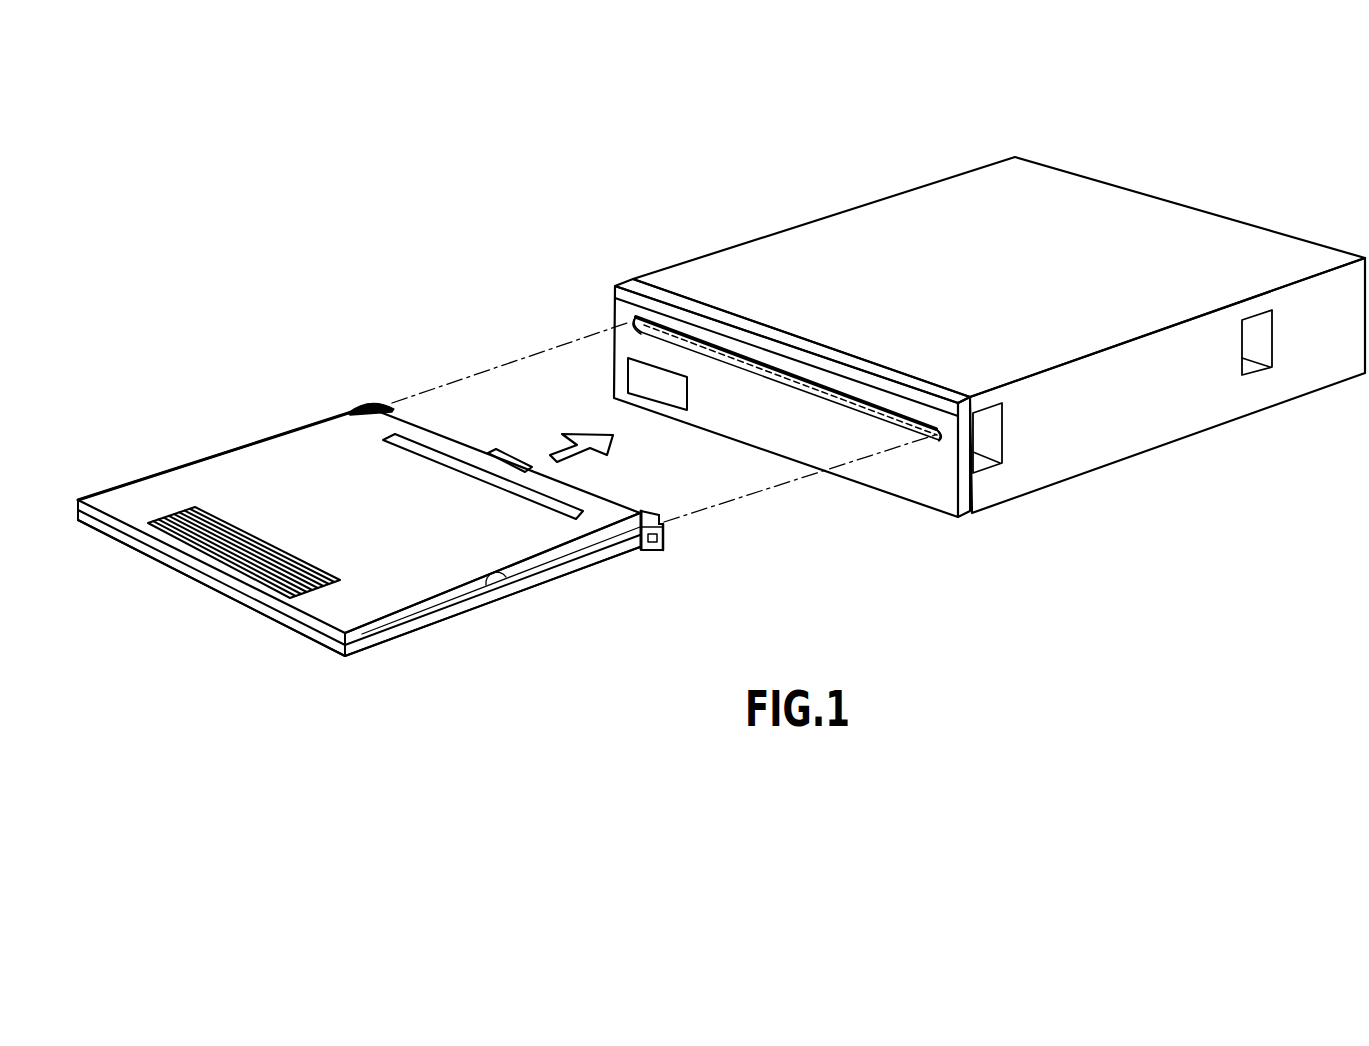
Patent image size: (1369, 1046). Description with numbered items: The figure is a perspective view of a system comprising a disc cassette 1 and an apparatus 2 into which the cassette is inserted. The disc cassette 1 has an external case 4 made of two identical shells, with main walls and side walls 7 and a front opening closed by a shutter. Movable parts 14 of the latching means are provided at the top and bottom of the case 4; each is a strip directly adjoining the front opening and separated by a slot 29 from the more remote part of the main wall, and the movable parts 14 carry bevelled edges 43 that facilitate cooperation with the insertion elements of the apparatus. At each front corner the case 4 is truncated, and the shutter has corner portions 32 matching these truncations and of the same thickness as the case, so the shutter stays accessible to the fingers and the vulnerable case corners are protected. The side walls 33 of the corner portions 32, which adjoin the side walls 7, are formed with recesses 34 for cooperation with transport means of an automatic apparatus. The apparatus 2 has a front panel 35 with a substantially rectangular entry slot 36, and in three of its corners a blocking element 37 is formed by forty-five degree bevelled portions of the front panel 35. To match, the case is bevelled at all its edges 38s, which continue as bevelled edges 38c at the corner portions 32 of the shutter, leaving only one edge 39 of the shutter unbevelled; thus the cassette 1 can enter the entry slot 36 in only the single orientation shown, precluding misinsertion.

The disc cassette 1 is at (208, 456).
The apparatus 2 is at (813, 223).
The external case 4 is at (532, 540).
The side walls 7 is at (413, 627).
The movable parts 14 is at (458, 447).
The slot 29 is at (434, 460).
The corner portions 32 is at (378, 403).
The side walls of the corner portions 33 is at (663, 527).
The recesses 34 is at (661, 546).
The front panel 35 is at (880, 483).
The entry slot 36 is at (808, 383).
The blocking element 37 is at (636, 318).
The bevelled edges of the shutter 38c is at (362, 401).
The bevelled edges of the case 38s is at (261, 438).
The non-bevelled edge 39 is at (655, 517).
The bevelled edges 43 is at (511, 461).